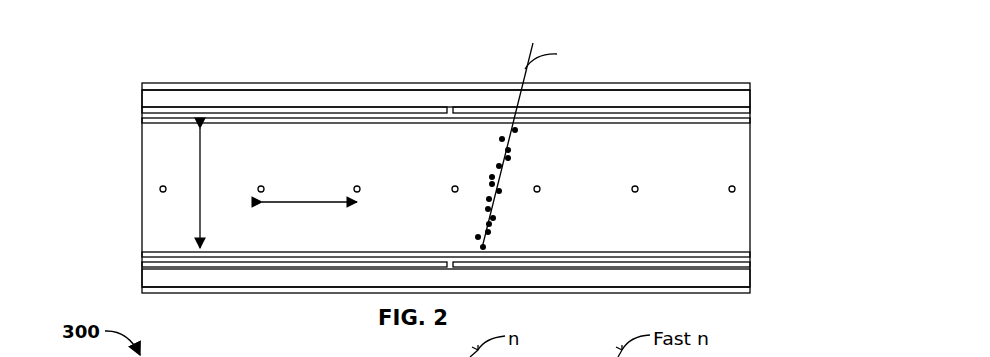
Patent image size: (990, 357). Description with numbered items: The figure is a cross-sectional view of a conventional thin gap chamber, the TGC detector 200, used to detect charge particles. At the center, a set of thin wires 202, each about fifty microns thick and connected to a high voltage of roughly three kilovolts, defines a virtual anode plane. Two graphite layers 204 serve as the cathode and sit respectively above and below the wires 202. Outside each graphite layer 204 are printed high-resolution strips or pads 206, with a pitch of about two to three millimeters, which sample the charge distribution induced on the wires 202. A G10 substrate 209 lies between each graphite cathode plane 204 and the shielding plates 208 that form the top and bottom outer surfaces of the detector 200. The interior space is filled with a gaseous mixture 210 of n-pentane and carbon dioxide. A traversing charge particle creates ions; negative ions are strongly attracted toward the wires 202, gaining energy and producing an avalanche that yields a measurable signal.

The TGC detector 200 is at (170, 68).
The wires 202 is at (736, 189).
The graphite layers 204 is at (142, 253).
The pads 206 is at (750, 110).
The shielding plates 208 is at (750, 84).
The G10 substrate 209 is at (142, 100).
The gaseous mixture 210 is at (737, 232).